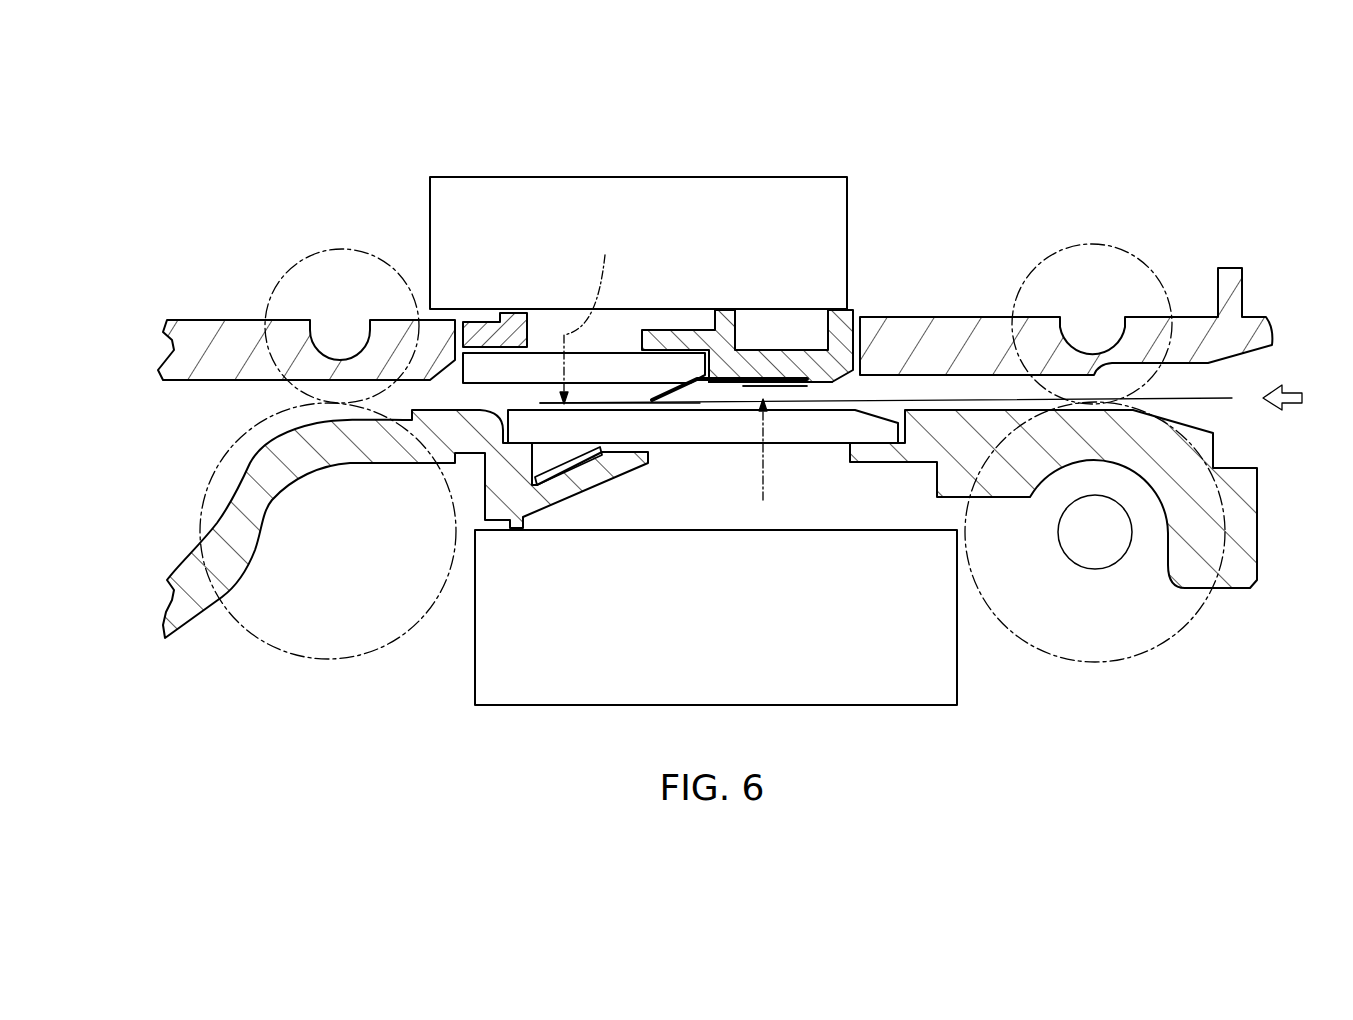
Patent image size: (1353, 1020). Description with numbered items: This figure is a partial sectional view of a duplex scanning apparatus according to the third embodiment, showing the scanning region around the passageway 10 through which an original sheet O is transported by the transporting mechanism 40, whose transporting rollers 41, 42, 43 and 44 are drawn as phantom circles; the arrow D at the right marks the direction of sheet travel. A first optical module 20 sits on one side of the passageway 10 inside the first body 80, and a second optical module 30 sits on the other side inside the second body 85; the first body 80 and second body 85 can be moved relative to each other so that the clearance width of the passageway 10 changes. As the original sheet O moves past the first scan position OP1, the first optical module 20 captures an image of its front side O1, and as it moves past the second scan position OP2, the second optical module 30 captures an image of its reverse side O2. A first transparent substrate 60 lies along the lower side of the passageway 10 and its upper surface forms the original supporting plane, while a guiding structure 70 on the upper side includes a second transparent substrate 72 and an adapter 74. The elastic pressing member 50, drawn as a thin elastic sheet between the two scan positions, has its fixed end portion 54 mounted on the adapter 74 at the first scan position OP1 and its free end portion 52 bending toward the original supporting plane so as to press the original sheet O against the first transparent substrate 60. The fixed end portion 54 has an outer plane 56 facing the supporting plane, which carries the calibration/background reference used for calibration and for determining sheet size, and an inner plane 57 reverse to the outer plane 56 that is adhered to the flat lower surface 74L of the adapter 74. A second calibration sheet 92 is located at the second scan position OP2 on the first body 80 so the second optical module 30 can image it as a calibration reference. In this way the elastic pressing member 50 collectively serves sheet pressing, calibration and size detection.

The passageway 10 is at (884, 390).
The first optical module 20 is at (512, 688).
The second optical module 30 is at (848, 178).
The transporting mechanism 40 is at (657, 427).
The transporting roller 41 is at (292, 265).
The transporting roller 42 is at (265, 640).
The transporting roller 43 is at (1147, 263).
The transporting roller 44 is at (1162, 642).
The elastic pressing member 50 is at (677, 405).
The free end portion 52 is at (653, 402).
The fixed end portion 54 is at (725, 378).
The outer plane 56 is at (786, 388).
The inner plane 57 is at (767, 378).
The first transparent substrate 60 is at (528, 425).
The guiding structure 70 is at (575, 246).
The second transparent substrate 72 is at (493, 368).
The adapter 74 is at (731, 325).
The flat lower surface 74L is at (797, 373).
The first body 80 is at (1245, 518).
The second body 85 is at (1270, 325).
The second calibration sheet 92 is at (563, 473).
The original sheet O is at (990, 398).
The front side O1 is at (825, 403).
The reverse side O2 is at (593, 403).
The first scan position OP1 is at (763, 502).
The second scan position OP2 is at (592, 315).
The conveying direction D is at (1284, 411).